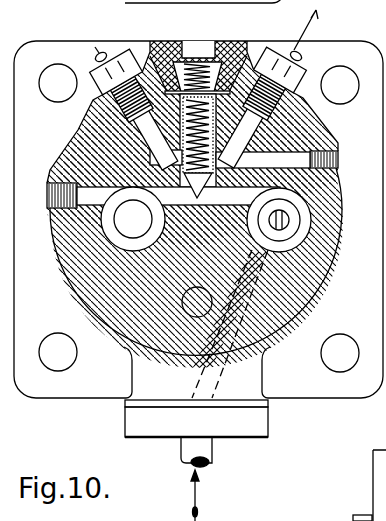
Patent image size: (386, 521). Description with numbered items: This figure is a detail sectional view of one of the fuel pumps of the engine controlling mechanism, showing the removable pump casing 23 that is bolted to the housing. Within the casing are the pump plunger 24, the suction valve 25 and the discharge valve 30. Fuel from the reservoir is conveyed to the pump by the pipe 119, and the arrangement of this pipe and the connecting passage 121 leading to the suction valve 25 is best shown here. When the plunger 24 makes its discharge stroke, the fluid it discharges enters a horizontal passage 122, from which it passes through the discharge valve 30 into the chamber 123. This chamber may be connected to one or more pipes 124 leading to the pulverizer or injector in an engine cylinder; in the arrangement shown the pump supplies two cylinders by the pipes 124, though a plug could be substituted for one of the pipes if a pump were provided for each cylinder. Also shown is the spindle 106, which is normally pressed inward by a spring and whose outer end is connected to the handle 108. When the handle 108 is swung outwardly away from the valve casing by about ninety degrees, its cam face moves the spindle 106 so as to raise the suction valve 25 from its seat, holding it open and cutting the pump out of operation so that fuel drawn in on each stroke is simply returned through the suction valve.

The pump casing 23 is at (198, 219).
The plunger 24 is at (133, 219).
The suction valve 25 is at (290, 213).
The discharge valve 30 is at (192, 153).
The spindle 106 is at (192, 316).
The handle 108 is at (360, 514).
The pipe 119 is at (210, 450).
The connecting passage 121 is at (222, 367).
The horizontal passage 122 is at (178, 198).
The chamber 123 is at (226, 161).
The pipes 124 is at (110, 50).